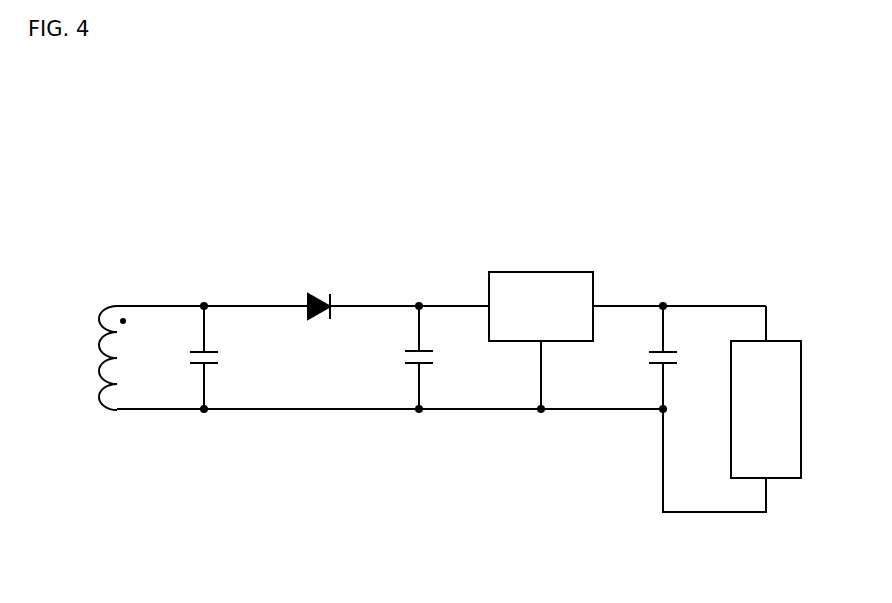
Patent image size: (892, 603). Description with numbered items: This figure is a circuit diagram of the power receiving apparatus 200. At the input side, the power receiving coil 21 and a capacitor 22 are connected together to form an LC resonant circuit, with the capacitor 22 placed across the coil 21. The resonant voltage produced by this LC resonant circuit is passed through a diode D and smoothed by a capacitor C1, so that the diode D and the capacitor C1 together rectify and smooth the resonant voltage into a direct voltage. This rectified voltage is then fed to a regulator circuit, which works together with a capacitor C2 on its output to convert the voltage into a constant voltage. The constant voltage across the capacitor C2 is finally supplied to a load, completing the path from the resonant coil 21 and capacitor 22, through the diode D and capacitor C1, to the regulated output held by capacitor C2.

The power receiving apparatus 200 is at (753, 216).
The power receiving coil 21 is at (96, 358).
The capacitor 22 is at (186, 357).
The diode D is at (319, 292).
The capacitor C1 is at (400, 357).
The capacitor C2 is at (679, 357).